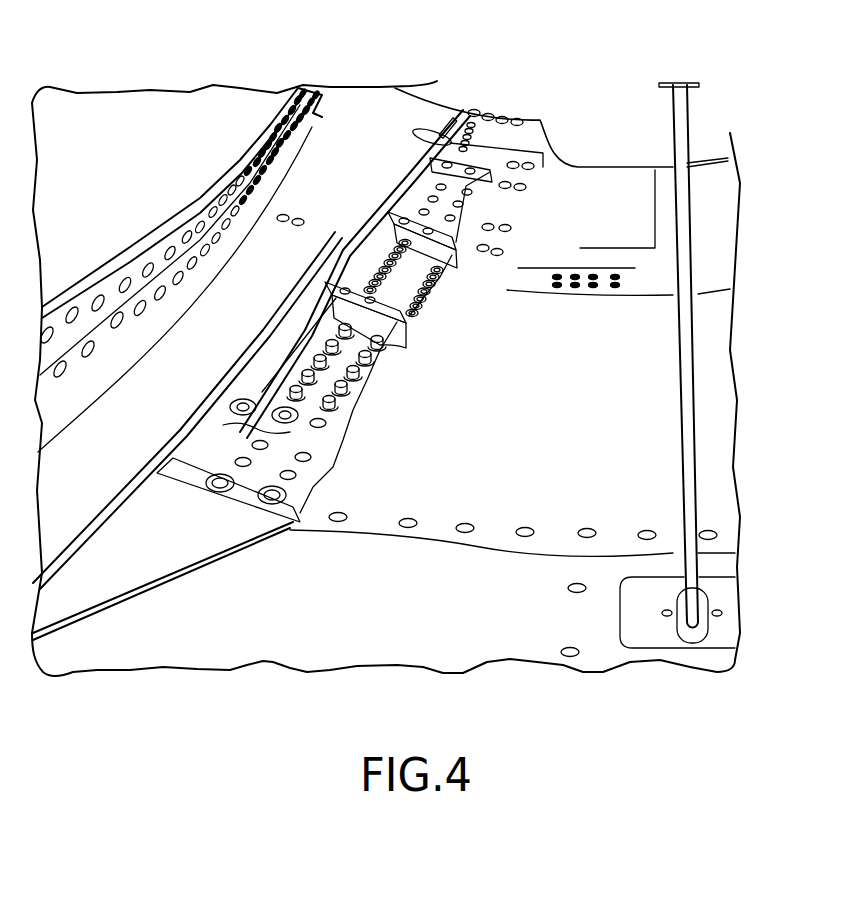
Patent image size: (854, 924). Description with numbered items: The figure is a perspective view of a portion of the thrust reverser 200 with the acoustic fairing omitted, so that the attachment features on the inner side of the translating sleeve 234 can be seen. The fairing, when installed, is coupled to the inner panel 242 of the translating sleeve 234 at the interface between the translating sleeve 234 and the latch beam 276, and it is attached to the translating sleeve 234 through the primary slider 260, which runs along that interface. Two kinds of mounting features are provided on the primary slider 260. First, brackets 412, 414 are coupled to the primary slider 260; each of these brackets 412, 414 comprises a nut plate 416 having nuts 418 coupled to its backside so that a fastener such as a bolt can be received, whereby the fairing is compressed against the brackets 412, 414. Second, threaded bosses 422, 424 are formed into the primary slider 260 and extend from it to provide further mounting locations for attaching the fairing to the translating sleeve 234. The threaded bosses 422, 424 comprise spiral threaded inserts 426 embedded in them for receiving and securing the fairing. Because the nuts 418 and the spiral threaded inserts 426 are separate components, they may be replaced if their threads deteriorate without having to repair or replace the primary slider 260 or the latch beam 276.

The thrust reverser 200 is at (610, 78).
The translating sleeve 234 is at (565, 482).
The inner panel 242 is at (580, 424).
The primary slider 260 is at (220, 447).
The latch beam 276 is at (140, 437).
The bracket 412 is at (412, 314).
The bracket 414 is at (458, 240).
The nut plate 416 is at (352, 290).
The nuts 418 is at (316, 291).
The threaded boss 422 is at (288, 432).
The threaded boss 424 is at (490, 175).
The spiral threaded inserts 426 is at (285, 411).